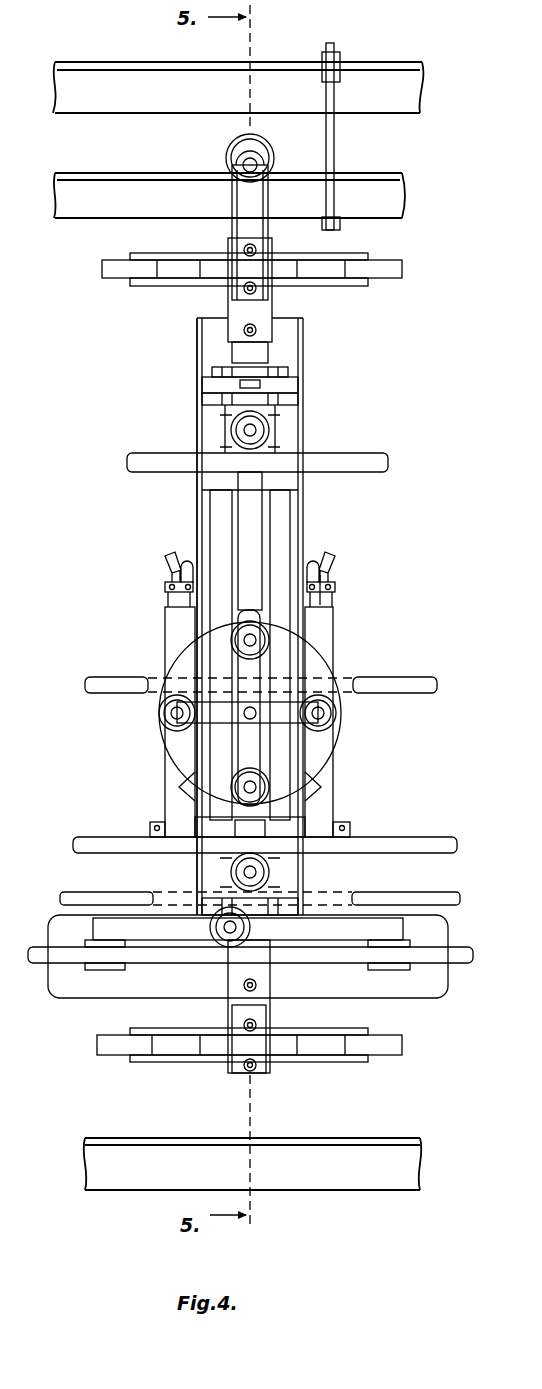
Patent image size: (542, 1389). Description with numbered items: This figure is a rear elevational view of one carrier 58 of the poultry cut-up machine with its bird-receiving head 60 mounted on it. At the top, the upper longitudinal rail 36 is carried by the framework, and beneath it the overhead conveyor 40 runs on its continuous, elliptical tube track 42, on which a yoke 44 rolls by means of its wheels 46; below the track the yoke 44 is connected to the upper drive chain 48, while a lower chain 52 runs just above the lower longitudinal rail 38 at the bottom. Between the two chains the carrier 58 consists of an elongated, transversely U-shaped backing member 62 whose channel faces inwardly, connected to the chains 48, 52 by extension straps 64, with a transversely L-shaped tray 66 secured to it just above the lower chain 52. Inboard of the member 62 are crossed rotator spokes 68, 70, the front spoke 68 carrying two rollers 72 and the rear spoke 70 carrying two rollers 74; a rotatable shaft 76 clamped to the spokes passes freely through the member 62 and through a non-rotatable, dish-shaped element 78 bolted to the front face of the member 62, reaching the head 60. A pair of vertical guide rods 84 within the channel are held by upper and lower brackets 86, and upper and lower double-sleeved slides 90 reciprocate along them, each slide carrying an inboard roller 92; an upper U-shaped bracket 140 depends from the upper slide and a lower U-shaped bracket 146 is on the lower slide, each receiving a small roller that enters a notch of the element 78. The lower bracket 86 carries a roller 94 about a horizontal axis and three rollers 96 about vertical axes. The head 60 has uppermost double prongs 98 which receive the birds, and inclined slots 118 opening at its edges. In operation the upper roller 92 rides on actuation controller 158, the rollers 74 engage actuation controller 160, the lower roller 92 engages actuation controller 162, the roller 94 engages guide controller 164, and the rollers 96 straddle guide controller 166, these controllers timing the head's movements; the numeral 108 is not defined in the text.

The upper longitudinal rail 36 is at (414, 86).
The lower longitudinal rail 38 is at (354, 1178).
The overhead conveyor 40 is at (394, 160).
The tube track 42 is at (77, 183).
The yoke 44 is at (258, 192).
The wheel 46 is at (236, 148).
The upper drive chain 48 is at (398, 270).
The lower chain 52 is at (120, 1048).
The carrier 58 is at (190, 357).
The bird-receiving head 60 is at (346, 618).
The backing member 62 is at (292, 340).
The extension strap 64 is at (240, 311).
The tray 66 is at (62, 986).
The front rotator spoke 68 is at (255, 667).
The rear rotator spoke 70 is at (166, 740).
The roller 72 is at (235, 632).
The roller 74 is at (160, 711).
The rotatable shaft 76 is at (255, 718).
The dish-shaped element 78 is at (330, 757).
The guide rod 84 is at (277, 496).
The bracket 86 is at (292, 386).
The slide 90 is at (216, 425).
The roller 92 is at (268, 432).
The roller 94 is at (212, 933).
The roller 96 is at (108, 964).
The double prong 98 is at (168, 576).
The lug pin 108 is at (336, 600).
The inclined slot 118 is at (172, 786).
The upper U-shaped bracket 140 is at (245, 525).
The lower U-shaped bracket 146 is at (240, 821).
The actuation controller 158 is at (140, 451).
The actuation controller 160 is at (440, 680).
The actuation controller 162 is at (440, 838).
The guide controller 164 is at (450, 896).
The guide controller 166 is at (460, 948).